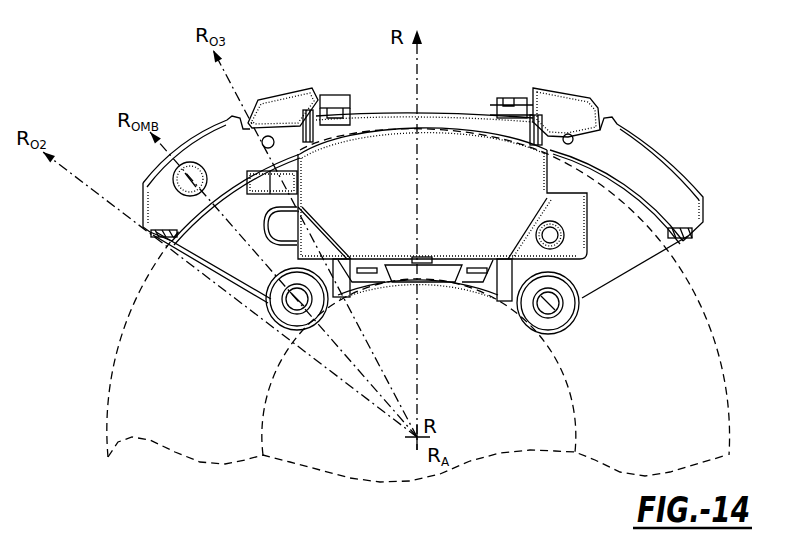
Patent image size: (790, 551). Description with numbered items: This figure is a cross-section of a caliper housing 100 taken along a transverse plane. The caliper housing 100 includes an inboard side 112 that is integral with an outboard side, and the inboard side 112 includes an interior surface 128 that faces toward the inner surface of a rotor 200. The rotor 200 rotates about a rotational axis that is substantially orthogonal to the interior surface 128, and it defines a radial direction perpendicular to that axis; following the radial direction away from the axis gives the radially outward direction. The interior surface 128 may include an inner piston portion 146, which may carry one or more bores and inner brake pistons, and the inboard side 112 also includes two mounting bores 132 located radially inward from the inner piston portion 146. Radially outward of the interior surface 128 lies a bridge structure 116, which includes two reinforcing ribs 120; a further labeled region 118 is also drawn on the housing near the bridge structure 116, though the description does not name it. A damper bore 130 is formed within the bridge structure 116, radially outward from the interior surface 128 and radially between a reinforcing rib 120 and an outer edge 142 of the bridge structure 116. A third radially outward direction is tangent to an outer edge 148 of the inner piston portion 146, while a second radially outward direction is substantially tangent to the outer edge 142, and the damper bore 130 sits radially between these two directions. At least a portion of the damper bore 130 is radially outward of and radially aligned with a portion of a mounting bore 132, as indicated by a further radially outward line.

The caliper housing 100 is at (715, 124).
The inboard side 112 is at (607, 222).
The bridge structure 116 is at (628, 152).
The housing 118 is at (376, 150).
The reinforcing ribs 120 is at (308, 99).
The interior surface 128 is at (583, 282).
The damper bore 130 is at (185, 176).
The mounting bores 132 is at (294, 302).
The outer edge of the bridge structure 142 is at (140, 228).
The inner piston portion 146 is at (465, 202).
The outer edge of the inner piston portion 148 is at (299, 205).
The rotor 200 is at (688, 355).